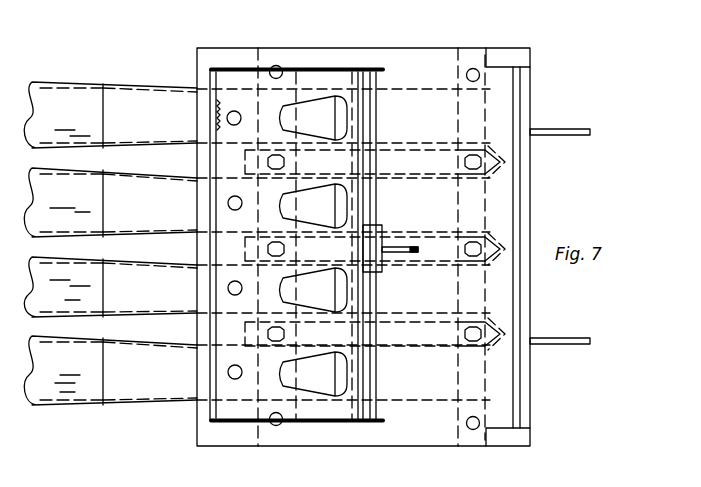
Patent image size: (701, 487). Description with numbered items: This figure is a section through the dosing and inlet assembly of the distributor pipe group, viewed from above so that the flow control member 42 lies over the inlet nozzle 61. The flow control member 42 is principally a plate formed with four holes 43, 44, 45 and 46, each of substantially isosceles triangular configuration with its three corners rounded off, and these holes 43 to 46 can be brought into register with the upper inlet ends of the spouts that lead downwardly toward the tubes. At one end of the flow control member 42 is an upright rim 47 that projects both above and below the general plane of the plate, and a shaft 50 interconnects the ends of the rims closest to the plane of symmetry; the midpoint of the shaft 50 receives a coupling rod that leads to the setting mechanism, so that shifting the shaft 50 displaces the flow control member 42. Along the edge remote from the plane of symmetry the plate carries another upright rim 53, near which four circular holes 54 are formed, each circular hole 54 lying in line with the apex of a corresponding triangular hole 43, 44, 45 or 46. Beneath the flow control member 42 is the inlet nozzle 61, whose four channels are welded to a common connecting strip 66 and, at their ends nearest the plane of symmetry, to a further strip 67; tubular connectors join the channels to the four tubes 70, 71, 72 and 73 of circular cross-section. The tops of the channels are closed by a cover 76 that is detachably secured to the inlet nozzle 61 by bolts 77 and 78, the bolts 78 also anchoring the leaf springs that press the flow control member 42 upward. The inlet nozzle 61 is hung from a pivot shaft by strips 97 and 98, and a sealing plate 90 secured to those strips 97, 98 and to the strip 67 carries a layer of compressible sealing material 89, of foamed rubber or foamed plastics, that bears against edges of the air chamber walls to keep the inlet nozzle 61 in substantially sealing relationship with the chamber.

The tube 70 is at (70, 84).
The tube 71 is at (84, 203).
The tube 72 is at (139, 293).
The tube 73 is at (147, 375).
The upright rim 53 is at (212, 101).
The circular hole 54 is at (228, 203).
The upright rim 47 is at (233, 68).
The flow control member 42 is at (343, 67).
The bolt 77 is at (278, 65).
The cover 76 is at (433, 30).
The bolt 78 is at (473, 67).
The compressible sealing material 89 is at (516, 50).
The hole 43 is at (330, 123).
The hole 44 is at (318, 196).
The hole 45 is at (340, 296).
The hole 46 is at (330, 381).
The shaft 50 is at (372, 216).
The sealing plate 90 is at (508, 238).
The connecting strip 66 is at (275, 448).
The strip 67 is at (458, 448).
The inlet nozzle 61 is at (532, 318).
The strip 98 is at (570, 137).
The strip 97 is at (568, 346).